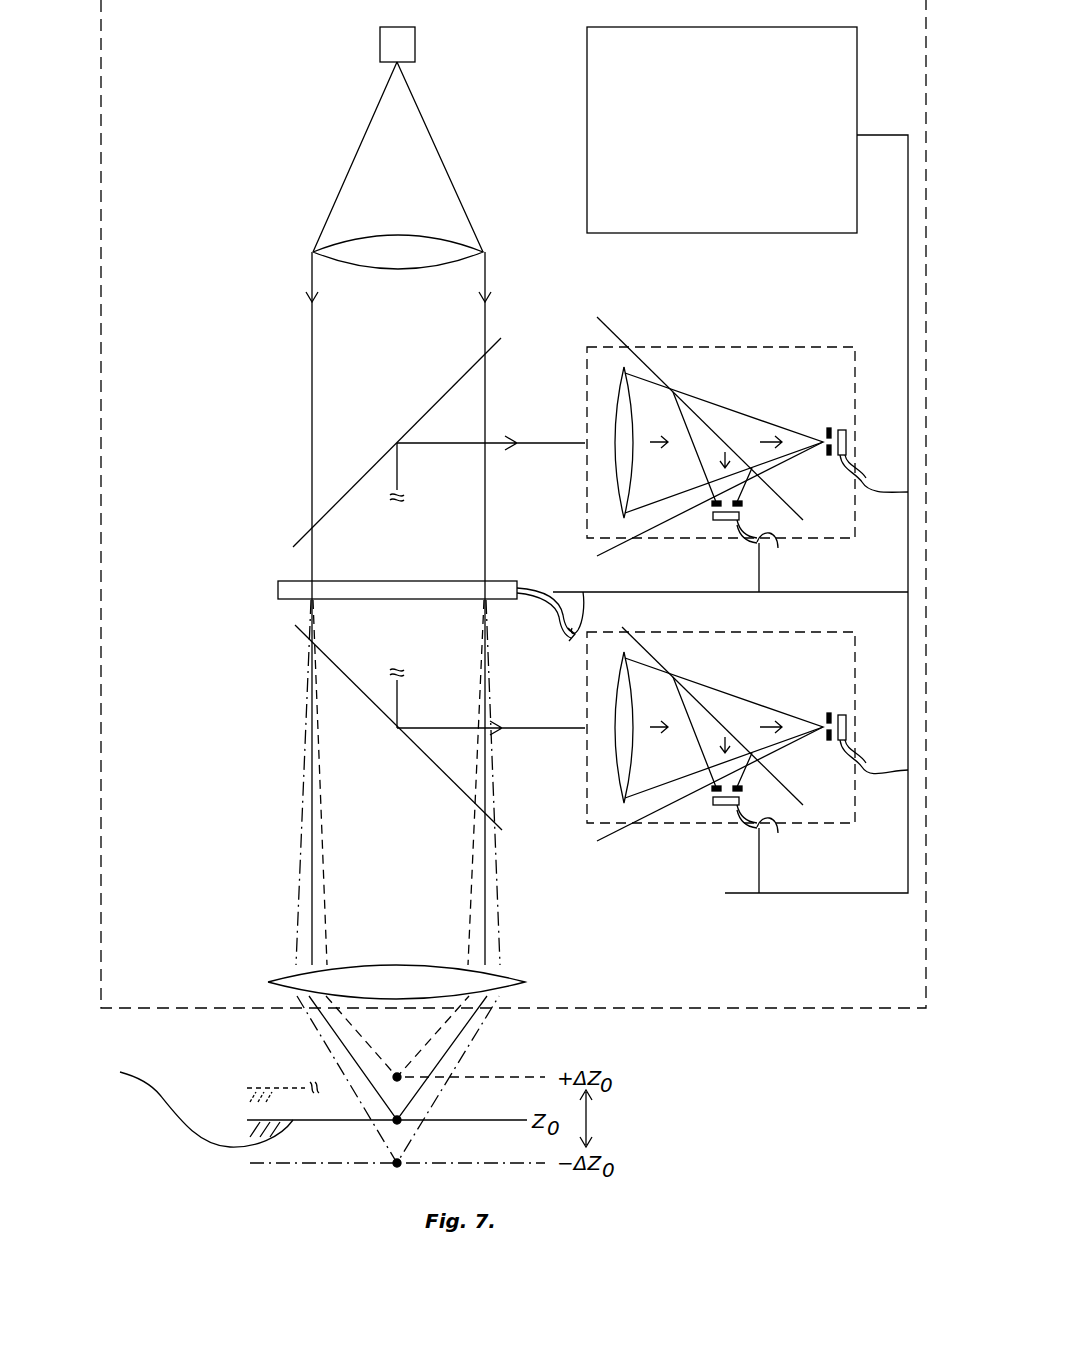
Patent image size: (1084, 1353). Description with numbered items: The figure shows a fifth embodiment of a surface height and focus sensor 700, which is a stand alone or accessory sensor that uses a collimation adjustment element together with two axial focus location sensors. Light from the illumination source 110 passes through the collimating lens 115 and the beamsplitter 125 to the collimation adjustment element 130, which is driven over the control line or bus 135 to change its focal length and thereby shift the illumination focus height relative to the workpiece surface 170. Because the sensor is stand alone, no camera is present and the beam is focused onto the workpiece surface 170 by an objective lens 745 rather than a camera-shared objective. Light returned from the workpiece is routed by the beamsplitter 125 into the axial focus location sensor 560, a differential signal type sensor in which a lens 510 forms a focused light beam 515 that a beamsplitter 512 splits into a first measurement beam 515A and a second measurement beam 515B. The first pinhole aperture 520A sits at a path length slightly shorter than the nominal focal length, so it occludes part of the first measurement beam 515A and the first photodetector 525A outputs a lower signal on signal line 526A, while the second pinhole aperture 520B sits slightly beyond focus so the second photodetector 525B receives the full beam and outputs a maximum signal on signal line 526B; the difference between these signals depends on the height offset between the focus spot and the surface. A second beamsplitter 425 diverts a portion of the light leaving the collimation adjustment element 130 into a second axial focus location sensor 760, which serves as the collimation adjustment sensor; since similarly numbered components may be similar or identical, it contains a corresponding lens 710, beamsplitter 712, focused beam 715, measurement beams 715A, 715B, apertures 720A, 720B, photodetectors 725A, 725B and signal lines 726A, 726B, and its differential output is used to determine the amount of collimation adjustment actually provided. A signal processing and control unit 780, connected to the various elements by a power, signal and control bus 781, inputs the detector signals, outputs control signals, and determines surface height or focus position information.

The illumination source 110 is at (380, 35).
The collimating lens 115 is at (370, 250).
The beamsplitter 125 is at (330, 508).
The collimation adjustment element 130 is at (278, 590).
The control line or bus 135 is at (543, 583).
The workpiece surface 170 is at (120, 1072).
The beamsplitter 425 is at (327, 656).
The lens 510 is at (622, 518).
The beamsplitter 512 is at (662, 432).
The focused light beam 515 is at (600, 322).
The first measurement beam 515A is at (684, 505).
The second measurement beam 515B is at (757, 440).
The first pinhole aperture 520A is at (718, 458).
The second pinhole aperture 520B is at (828, 427).
The first photodetector 525A is at (716, 520).
The second photodetector 525B is at (842, 428).
The signal line 526A is at (777, 556).
The signal line 526B is at (843, 462).
The axial focus location sensor 560 is at (587, 355).
The surface height and focus sensor 700 is at (833, 1010).
The focusing lens 710 is at (584, 729).
The focused beam 712 is at (724, 699).
The beam splitter 715 is at (695, 704).
The reflected beam path 715A is at (684, 788).
The transmitted beam path 715B is at (725, 668).
The aperture 720A is at (673, 797).
The aperture 720B is at (790, 670).
The detector 725A is at (709, 827).
The detector 725B is at (836, 668).
The detector signal line 726A is at (782, 849).
The detector signal line 726B is at (852, 811).
The objective lens 745 is at (268, 982).
The axial focus location sensor 760 is at (716, 744).
The signal processing and control unit 780 is at (587, 43).
The power, signal and control bus 781 is at (908, 282).